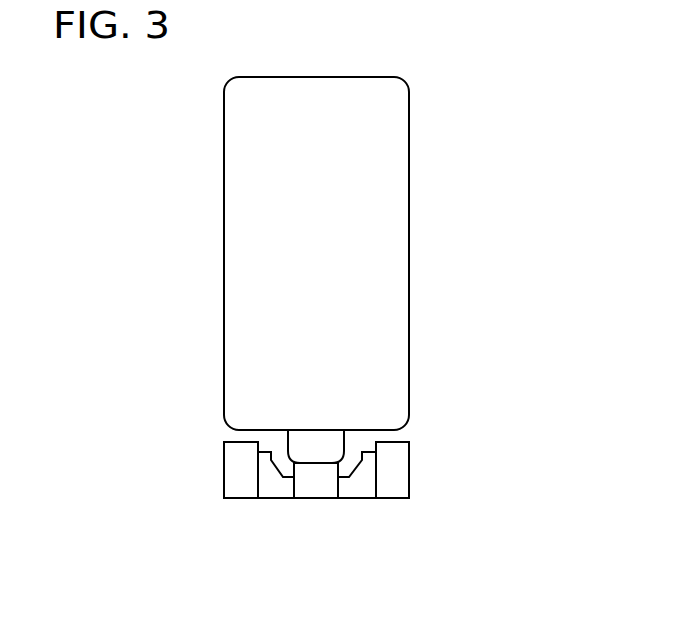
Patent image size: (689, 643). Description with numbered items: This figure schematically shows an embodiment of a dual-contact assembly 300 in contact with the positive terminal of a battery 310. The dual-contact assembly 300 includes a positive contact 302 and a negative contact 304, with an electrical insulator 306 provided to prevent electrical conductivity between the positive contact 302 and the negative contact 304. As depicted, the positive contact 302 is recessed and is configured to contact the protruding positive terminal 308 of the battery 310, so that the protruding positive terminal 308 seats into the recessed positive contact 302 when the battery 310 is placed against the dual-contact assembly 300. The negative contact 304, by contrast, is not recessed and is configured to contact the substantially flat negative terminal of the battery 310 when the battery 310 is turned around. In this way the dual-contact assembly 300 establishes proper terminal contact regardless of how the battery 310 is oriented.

The dual-contact assembly 300 is at (468, 544).
The positive contact 302 is at (315, 498).
The negative contact 304 is at (224, 482).
The electrical insulator 306 is at (265, 498).
The positive terminal 308 is at (327, 446).
The battery 310 is at (409, 392).